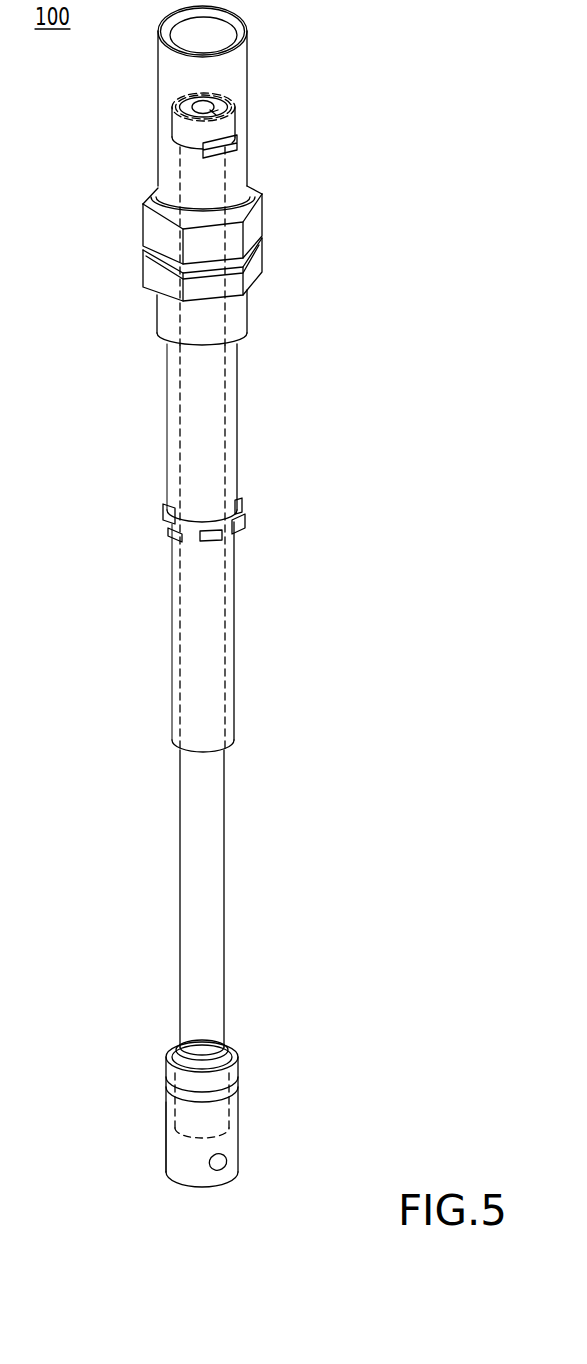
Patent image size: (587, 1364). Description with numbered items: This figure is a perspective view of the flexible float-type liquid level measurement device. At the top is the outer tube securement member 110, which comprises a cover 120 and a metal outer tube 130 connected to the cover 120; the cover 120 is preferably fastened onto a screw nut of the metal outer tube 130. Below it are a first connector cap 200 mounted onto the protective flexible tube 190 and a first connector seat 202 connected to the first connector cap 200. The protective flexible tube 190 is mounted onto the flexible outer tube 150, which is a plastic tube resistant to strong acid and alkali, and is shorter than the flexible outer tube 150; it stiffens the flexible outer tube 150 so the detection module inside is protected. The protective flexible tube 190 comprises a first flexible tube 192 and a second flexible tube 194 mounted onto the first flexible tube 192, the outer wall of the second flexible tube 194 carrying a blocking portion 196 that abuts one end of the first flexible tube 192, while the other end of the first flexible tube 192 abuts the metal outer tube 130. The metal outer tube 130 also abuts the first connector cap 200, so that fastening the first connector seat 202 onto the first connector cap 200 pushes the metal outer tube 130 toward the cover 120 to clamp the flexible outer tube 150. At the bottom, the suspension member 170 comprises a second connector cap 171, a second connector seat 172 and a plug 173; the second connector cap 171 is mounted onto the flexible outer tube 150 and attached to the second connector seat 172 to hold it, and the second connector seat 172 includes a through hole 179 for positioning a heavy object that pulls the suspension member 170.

The outer tube securement member 110 is at (352, 118).
The cover 120 is at (243, 119).
The metal outer tube 130 is at (243, 162).
The first connector cap 200 is at (255, 216).
The first connector seat 202 is at (258, 252).
The protective flexible tube 190 is at (326, 470).
The first flexible tube 192 is at (237, 452).
The second flexible tube 194 is at (233, 580).
The blocking portion 196 is at (165, 522).
The flexible outer tube 150 is at (215, 884).
The suspension member 170 is at (352, 1062).
The second connector cap 171 is at (238, 1052).
The plug 173 is at (240, 1108).
The second connector seat 172 is at (232, 1148).
The through hole 179 is at (218, 1163).